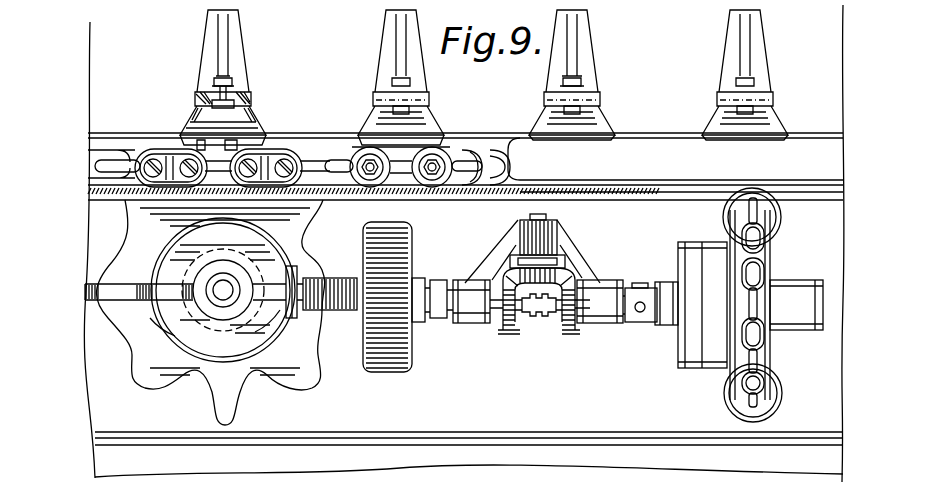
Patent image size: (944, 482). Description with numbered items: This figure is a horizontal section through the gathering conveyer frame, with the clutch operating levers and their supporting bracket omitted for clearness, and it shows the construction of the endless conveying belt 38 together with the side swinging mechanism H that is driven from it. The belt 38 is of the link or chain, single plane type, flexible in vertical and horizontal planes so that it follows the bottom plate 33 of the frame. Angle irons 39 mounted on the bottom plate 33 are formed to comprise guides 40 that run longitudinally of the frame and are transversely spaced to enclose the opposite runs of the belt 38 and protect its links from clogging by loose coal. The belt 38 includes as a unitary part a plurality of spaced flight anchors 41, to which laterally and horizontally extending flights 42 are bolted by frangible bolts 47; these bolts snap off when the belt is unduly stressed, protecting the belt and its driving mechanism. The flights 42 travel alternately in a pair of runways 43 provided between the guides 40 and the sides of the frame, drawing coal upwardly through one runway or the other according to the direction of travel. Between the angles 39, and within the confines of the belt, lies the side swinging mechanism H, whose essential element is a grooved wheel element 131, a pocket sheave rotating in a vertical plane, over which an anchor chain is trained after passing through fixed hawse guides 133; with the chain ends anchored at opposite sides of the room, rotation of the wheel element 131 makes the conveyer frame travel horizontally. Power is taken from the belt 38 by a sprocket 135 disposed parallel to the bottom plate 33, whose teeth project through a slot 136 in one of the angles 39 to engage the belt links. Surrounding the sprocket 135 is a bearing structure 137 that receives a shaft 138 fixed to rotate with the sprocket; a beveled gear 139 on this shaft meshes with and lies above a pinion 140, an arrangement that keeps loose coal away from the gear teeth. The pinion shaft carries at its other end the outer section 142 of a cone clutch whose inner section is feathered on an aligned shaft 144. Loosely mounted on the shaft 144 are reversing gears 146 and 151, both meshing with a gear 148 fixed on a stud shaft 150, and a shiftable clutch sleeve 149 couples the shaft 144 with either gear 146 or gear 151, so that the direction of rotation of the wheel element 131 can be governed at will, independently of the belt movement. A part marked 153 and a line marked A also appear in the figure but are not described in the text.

The bottom plate 33 is at (465, 299).
The endless conveying belt 38 is at (462, 193).
The angle irons 39 is at (578, 432).
The guides 40 is at (490, 192).
The flight anchors 41 is at (241, 133).
The flights 42 is at (733, 40).
The runways 43 is at (677, 101).
The frangible bolts 47 is at (230, 94).
The grooved wheel element 131 is at (768, 250).
The hawse guides 133 is at (778, 222).
The sprocket 135 is at (148, 333).
The slot 136 is at (318, 200).
The bearing structure 137 is at (110, 285).
The shaft 138 is at (225, 290).
The beveled gear 139 is at (258, 337).
The pinion 140 is at (293, 272).
The outer section of cone clutch 142 is at (363, 358).
The shaft 144 is at (446, 320).
The gear 146 is at (500, 328).
The gear 148 is at (548, 275).
The shiftable clutch sleeve 149 is at (540, 320).
The stud shaft 150 is at (537, 222).
The gear 151 is at (580, 283).
The clevis 153 is at (640, 322).
The side swinging mechanism H is at (740, 226).
The section line A is at (678, 455).